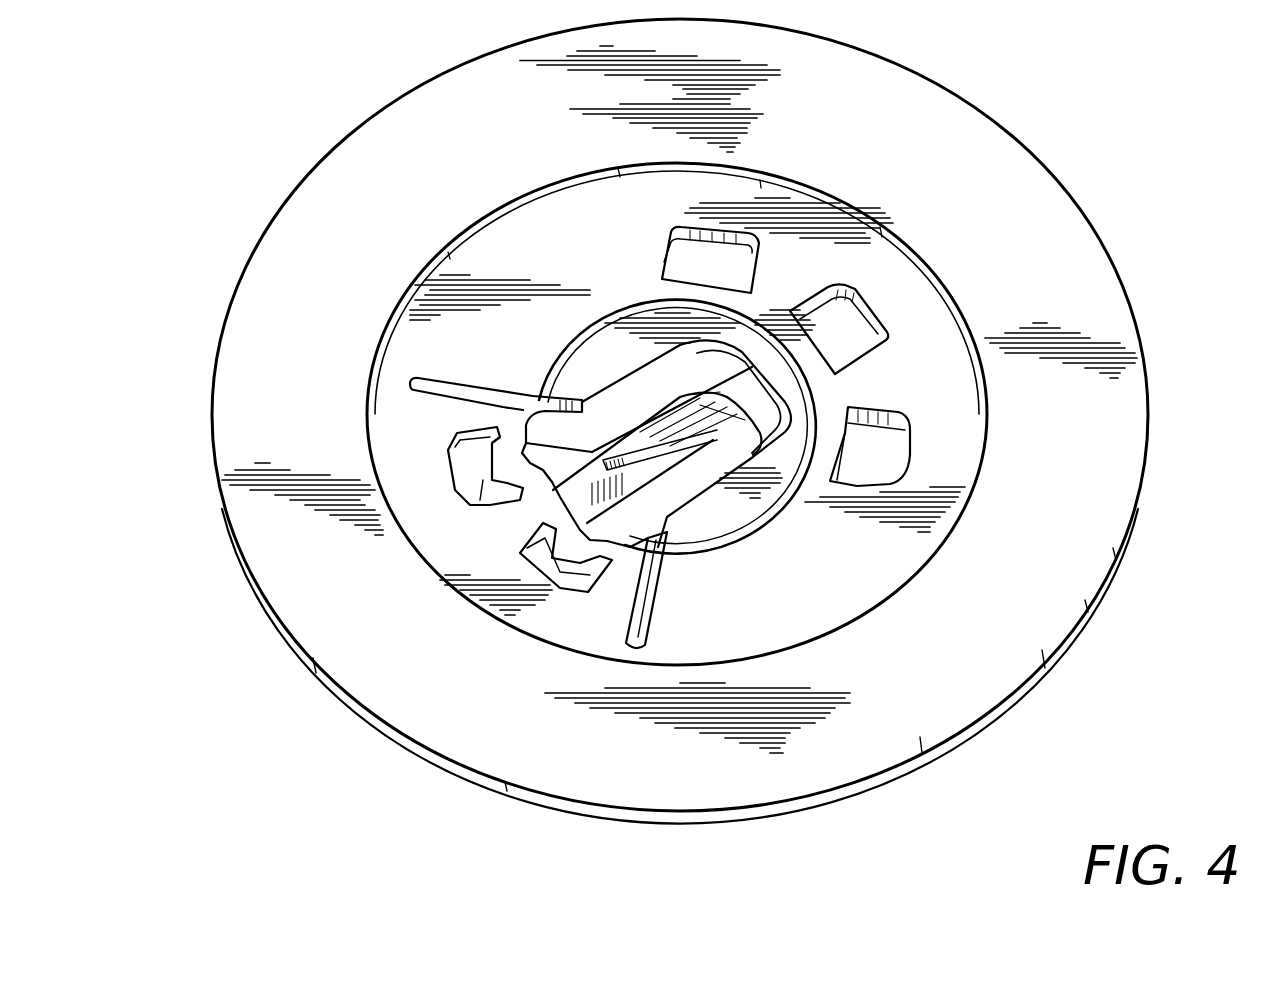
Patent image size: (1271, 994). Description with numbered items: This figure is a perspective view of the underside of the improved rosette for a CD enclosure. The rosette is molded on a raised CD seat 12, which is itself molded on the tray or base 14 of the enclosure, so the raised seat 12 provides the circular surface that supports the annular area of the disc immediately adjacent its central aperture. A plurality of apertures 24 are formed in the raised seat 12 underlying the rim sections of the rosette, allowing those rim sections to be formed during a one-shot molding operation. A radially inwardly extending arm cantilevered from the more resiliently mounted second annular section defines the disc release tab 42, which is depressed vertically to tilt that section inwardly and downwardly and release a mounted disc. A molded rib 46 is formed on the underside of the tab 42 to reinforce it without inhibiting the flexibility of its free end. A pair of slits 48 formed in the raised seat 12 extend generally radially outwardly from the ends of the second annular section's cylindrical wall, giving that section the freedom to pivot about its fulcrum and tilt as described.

The raised CD seat 12 is at (918, 297).
The tray or base 14 is at (302, 218).
The apertures 24 is at (460, 462).
The disc release tab 42 is at (690, 410).
The molded rib 46 is at (563, 507).
The slits 48 is at (647, 623).